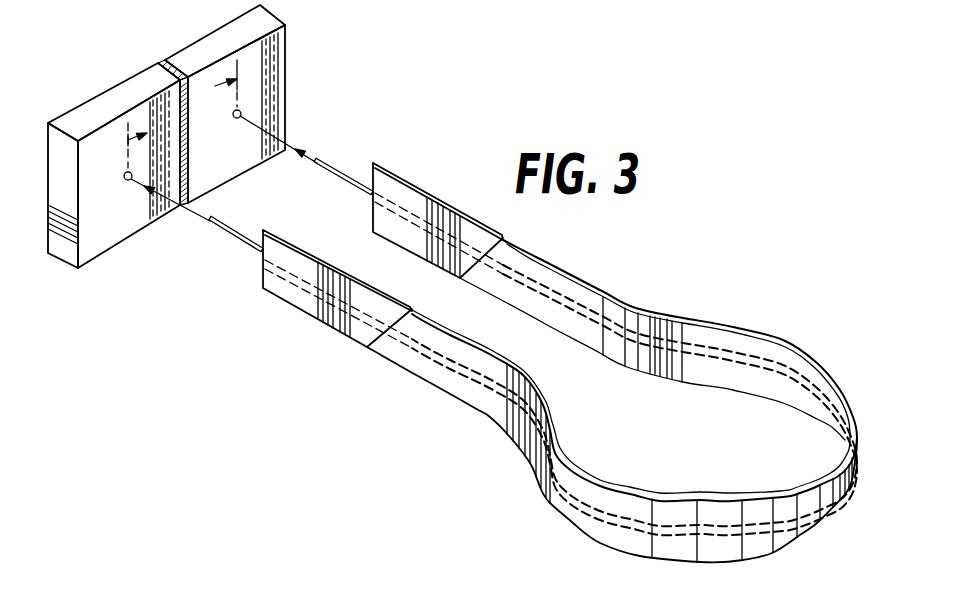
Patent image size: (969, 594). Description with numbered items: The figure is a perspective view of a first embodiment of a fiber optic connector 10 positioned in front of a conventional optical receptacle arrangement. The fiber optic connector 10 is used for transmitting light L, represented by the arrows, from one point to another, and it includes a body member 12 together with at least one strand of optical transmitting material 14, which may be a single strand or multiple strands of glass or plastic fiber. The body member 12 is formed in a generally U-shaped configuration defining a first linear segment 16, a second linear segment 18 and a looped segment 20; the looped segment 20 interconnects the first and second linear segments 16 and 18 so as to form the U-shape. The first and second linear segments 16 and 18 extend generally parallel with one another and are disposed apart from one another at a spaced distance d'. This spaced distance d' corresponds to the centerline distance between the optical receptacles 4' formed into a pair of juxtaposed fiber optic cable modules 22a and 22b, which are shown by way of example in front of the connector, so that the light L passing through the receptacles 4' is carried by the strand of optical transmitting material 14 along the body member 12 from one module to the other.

The fiber optic connector 10 is at (252, 321).
The body member 12 is at (376, 276).
The strand of optical transmitting material 14 is at (243, 241).
The first linear segment 16 is at (337, 311).
The second linear segment 18 is at (527, 297).
The looped segment 20 is at (825, 418).
The fiber optic cable module 22a is at (100, 107).
The fiber optic cable module 22b is at (193, 56).
The optical receptacle 4' is at (172, 158).
The spaced distance d' is at (182, 103).
The light L is at (186, 212).